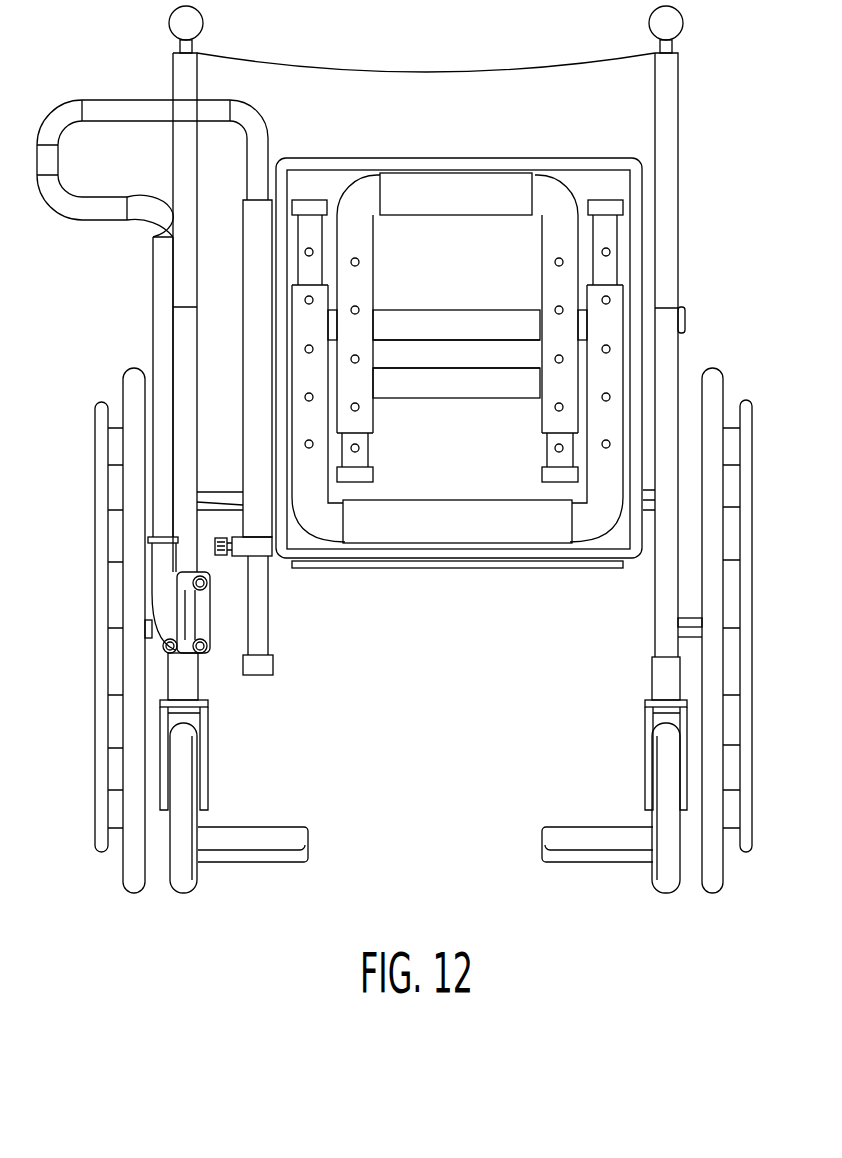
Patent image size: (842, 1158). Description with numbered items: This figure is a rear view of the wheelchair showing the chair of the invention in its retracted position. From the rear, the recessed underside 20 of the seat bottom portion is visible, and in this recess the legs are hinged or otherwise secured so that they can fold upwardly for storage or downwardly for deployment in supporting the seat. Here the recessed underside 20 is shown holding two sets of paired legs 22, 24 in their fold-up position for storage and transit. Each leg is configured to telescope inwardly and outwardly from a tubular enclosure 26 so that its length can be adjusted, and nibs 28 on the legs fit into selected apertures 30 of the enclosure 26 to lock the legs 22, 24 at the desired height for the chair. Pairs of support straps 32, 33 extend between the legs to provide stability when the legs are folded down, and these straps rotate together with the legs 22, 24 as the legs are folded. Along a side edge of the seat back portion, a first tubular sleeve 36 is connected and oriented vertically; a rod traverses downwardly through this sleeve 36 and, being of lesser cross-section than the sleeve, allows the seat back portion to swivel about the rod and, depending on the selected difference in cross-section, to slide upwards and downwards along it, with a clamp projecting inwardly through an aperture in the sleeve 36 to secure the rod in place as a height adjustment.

The recessed underside 20 is at (620, 182).
The paired legs 22 is at (310, 198).
The paired legs 24 is at (622, 208).
The tubular enclosure 26 is at (364, 190).
The nibs 28 is at (314, 252).
The apertures 30 is at (554, 262).
The support straps 32 is at (455, 320).
The support straps 33 is at (440, 390).
The first tubular sleeve 36 is at (243, 257).